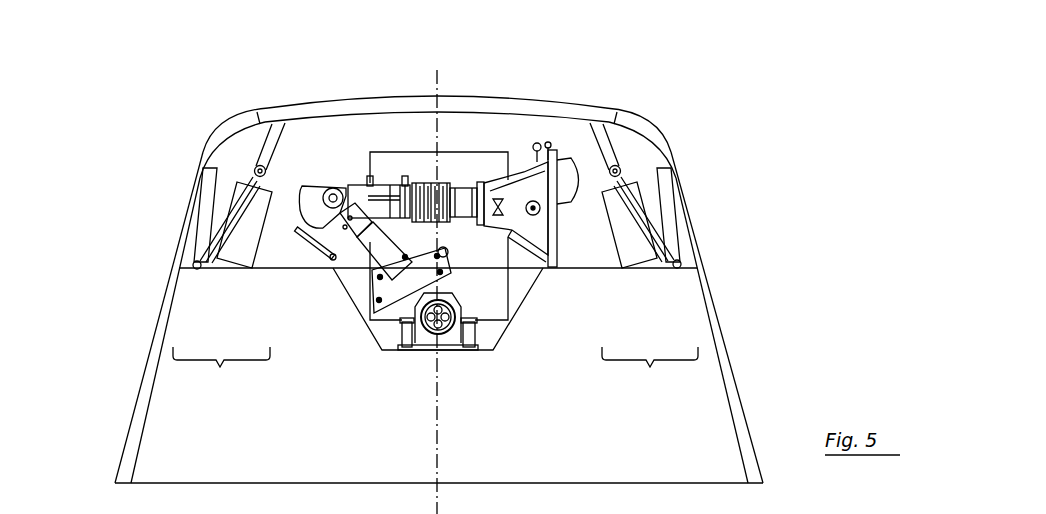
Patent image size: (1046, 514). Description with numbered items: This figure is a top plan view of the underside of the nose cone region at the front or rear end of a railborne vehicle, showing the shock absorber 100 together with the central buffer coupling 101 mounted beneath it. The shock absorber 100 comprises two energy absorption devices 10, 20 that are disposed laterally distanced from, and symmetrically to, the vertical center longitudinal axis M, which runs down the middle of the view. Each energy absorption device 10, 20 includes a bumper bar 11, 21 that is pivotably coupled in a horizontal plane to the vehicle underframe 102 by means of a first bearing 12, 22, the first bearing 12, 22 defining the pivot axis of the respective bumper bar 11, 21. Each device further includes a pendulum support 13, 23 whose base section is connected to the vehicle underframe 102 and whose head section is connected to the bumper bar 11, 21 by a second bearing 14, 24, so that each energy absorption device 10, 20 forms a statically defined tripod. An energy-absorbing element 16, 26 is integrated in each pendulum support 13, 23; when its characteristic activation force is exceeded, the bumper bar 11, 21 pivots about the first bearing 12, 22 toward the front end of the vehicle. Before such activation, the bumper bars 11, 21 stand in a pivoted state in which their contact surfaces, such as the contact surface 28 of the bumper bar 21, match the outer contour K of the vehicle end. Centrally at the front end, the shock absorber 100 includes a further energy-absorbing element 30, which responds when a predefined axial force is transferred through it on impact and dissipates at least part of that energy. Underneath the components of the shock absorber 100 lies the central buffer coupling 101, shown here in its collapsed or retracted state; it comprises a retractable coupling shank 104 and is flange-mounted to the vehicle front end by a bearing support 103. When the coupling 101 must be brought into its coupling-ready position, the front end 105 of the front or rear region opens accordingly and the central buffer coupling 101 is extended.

The shock absorber 100 is at (675, 62).
The central buffer coupling 101 is at (543, 98).
The vehicle underframe 102 is at (140, 396).
The bearing support 103 is at (501, 363).
The retractable coupling shank 104 is at (315, 101).
The front end 105 is at (253, 91).
The energy absorption device 10 is at (158, 250).
The bumper bar 11 is at (175, 187).
The first bearing 12 is at (146, 251).
The pendulum support 13 is at (146, 219).
The energy-absorbing element 16 is at (153, 207).
The second bearing 14 is at (159, 139).
The energy absorption device 20 is at (720, 253).
The bumper bar 21 is at (704, 179).
The first bearing 22 is at (730, 255).
The pendulum support 23 is at (732, 215).
The energy-absorbing element 26 is at (727, 206).
The second bearing 24 is at (719, 142).
The contact surface 28 is at (715, 146).
The further energy-absorbing element 30 is at (549, 300).
The outer contour K is at (177, 105).
The vertical center longitudinal axis M is at (386, 60).